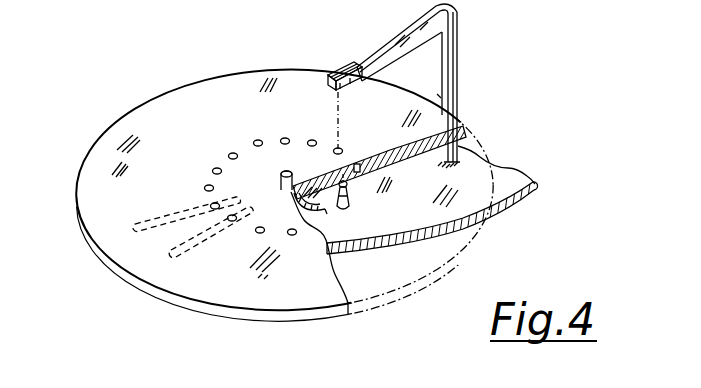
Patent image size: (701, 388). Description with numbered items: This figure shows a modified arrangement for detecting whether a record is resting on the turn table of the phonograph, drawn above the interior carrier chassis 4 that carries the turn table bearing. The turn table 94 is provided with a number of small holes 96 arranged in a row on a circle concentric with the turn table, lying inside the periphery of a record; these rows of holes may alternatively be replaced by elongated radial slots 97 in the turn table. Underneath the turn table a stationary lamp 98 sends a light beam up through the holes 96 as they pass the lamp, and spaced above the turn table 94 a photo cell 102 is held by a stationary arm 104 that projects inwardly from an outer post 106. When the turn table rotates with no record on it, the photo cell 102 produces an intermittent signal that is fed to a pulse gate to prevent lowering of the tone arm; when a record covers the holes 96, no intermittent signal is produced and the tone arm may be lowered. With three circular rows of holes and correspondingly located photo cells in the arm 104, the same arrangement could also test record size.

The carrier chassis 4 is at (529, 188).
The turn table 94 is at (107, 233).
The holes 96 is at (286, 138).
The elongated radial slots 97 is at (201, 244).
The stationary lamp 98 is at (350, 192).
The photo cell 102 is at (342, 88).
The stationary arm 104 is at (374, 52).
The outer post 106 is at (458, 71).